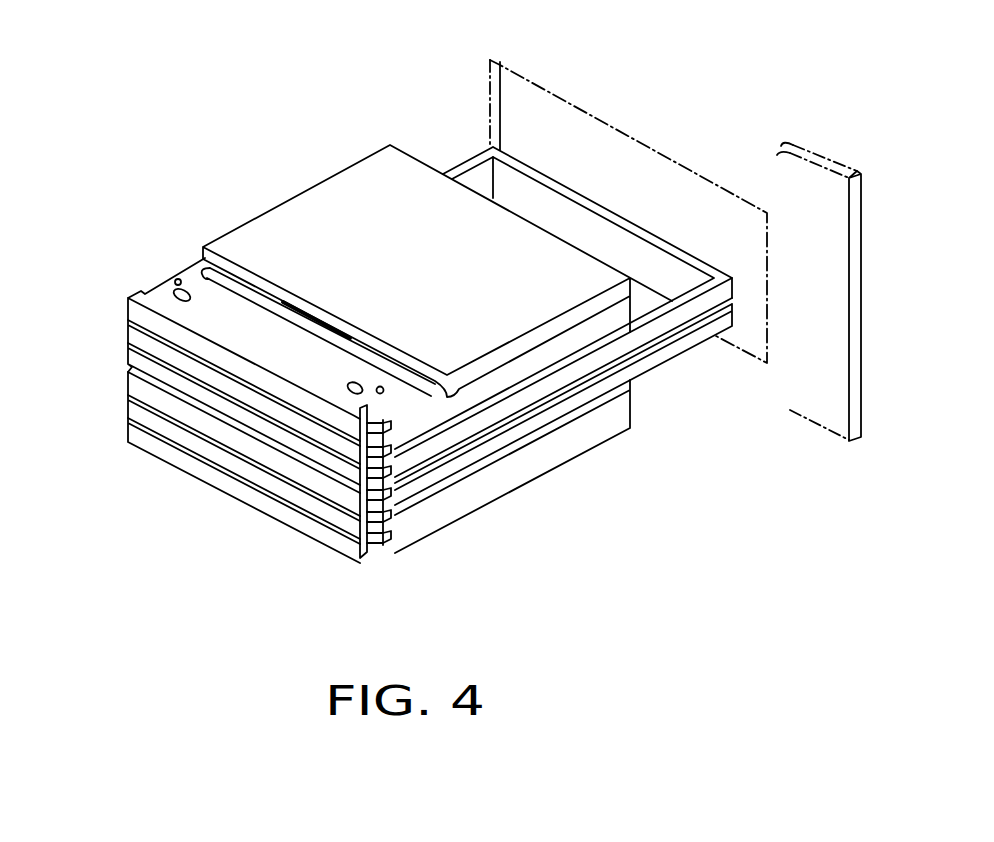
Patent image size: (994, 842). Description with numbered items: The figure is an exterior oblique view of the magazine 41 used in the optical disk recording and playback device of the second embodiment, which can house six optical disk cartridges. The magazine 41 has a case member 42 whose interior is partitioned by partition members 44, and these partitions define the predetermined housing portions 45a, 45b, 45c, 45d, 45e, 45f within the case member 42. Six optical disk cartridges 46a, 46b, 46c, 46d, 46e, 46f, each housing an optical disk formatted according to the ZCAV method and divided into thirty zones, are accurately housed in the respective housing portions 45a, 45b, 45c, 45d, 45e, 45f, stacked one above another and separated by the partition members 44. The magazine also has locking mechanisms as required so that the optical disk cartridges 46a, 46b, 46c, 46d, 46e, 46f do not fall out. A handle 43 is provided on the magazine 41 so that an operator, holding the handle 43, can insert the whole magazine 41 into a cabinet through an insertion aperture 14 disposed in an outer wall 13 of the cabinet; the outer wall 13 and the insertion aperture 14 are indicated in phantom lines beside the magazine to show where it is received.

The outer wall 13 is at (849, 440).
The insertion aperture 14 is at (740, 351).
The magazine 41 is at (292, 198).
The case member 42 is at (523, 482).
The handle 43 is at (590, 200).
The partition members 44 is at (333, 547).
The housing portion 45a is at (392, 425).
The housing portion 45b is at (392, 446).
The housing portion 45c is at (391, 468).
The housing portion 45d is at (392, 490).
The housing portion 45e is at (389, 516).
The housing portion 45f is at (382, 545).
The optical disk cartridge 46a is at (127, 297).
The optical disk cartridge 46b is at (128, 322).
The optical disk cartridge 46c is at (127, 348).
The optical disk cartridge 46d is at (127, 388).
The optical disk cartridge 46e is at (127, 413).
The optical disk cartridge 46f is at (130, 444).